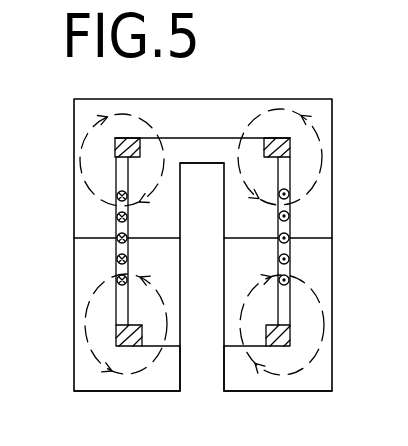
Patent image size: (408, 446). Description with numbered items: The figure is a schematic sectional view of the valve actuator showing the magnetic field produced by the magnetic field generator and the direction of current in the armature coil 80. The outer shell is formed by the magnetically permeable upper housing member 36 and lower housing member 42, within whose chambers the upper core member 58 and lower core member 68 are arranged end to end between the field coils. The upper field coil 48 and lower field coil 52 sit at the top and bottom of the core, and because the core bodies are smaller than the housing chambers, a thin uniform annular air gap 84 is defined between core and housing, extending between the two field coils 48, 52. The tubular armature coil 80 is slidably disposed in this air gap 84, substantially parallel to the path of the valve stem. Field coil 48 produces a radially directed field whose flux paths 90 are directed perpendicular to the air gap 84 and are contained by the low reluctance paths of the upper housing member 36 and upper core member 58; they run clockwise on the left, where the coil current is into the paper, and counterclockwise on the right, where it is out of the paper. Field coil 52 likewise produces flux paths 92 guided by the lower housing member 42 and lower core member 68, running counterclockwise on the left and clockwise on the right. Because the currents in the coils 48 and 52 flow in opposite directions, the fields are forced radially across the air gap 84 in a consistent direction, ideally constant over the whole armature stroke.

The upper tubular housing member 36 is at (75, 99).
The lower tubular housing member 42 is at (93, 377).
The upper field coil 48 is at (128, 142).
The lower field coil 52 is at (140, 348).
The upper core member 58 is at (168, 213).
The lower core member 68 is at (239, 300).
The armature coil 80 is at (115, 242).
The annular air gap 84 is at (118, 172).
The flux paths 90 is at (86, 138).
The flux paths 92 is at (86, 322).